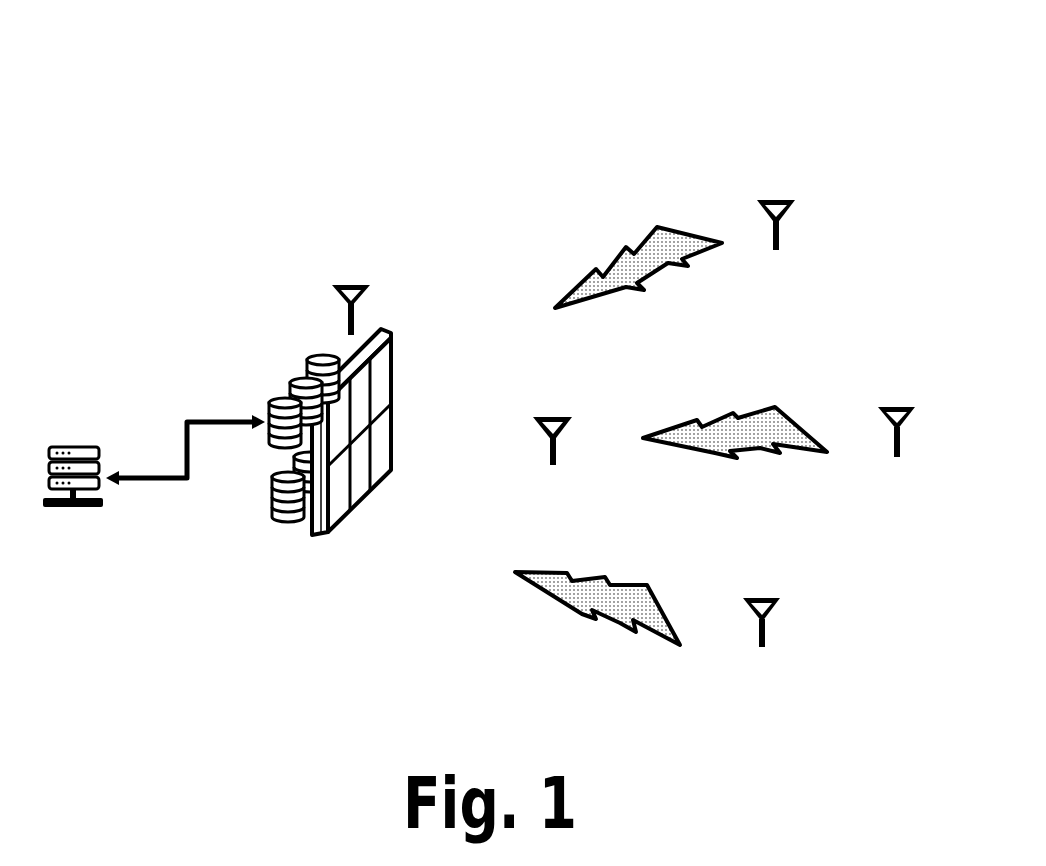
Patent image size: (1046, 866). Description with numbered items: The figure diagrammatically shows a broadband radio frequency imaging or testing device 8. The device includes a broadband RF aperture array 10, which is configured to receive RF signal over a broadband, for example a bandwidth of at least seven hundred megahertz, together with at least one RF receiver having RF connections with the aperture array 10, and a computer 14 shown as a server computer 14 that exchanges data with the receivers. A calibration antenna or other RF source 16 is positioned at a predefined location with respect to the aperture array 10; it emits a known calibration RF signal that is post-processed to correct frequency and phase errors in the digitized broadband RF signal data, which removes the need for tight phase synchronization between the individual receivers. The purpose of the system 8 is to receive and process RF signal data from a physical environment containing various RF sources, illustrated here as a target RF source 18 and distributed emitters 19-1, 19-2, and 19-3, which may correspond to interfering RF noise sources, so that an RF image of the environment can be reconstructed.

The broadband RF imaging or testing device 8 is at (457, 170).
The broadband RF aperture array 10 is at (414, 361).
The computer 14 is at (80, 448).
The calibration RF source 16 is at (584, 401).
The target RF source 18 is at (351, 260).
The distributed emitter 19-1 is at (816, 196).
The distributed emitter 19-2 is at (909, 383).
The distributed emitter 19-3 is at (797, 606).